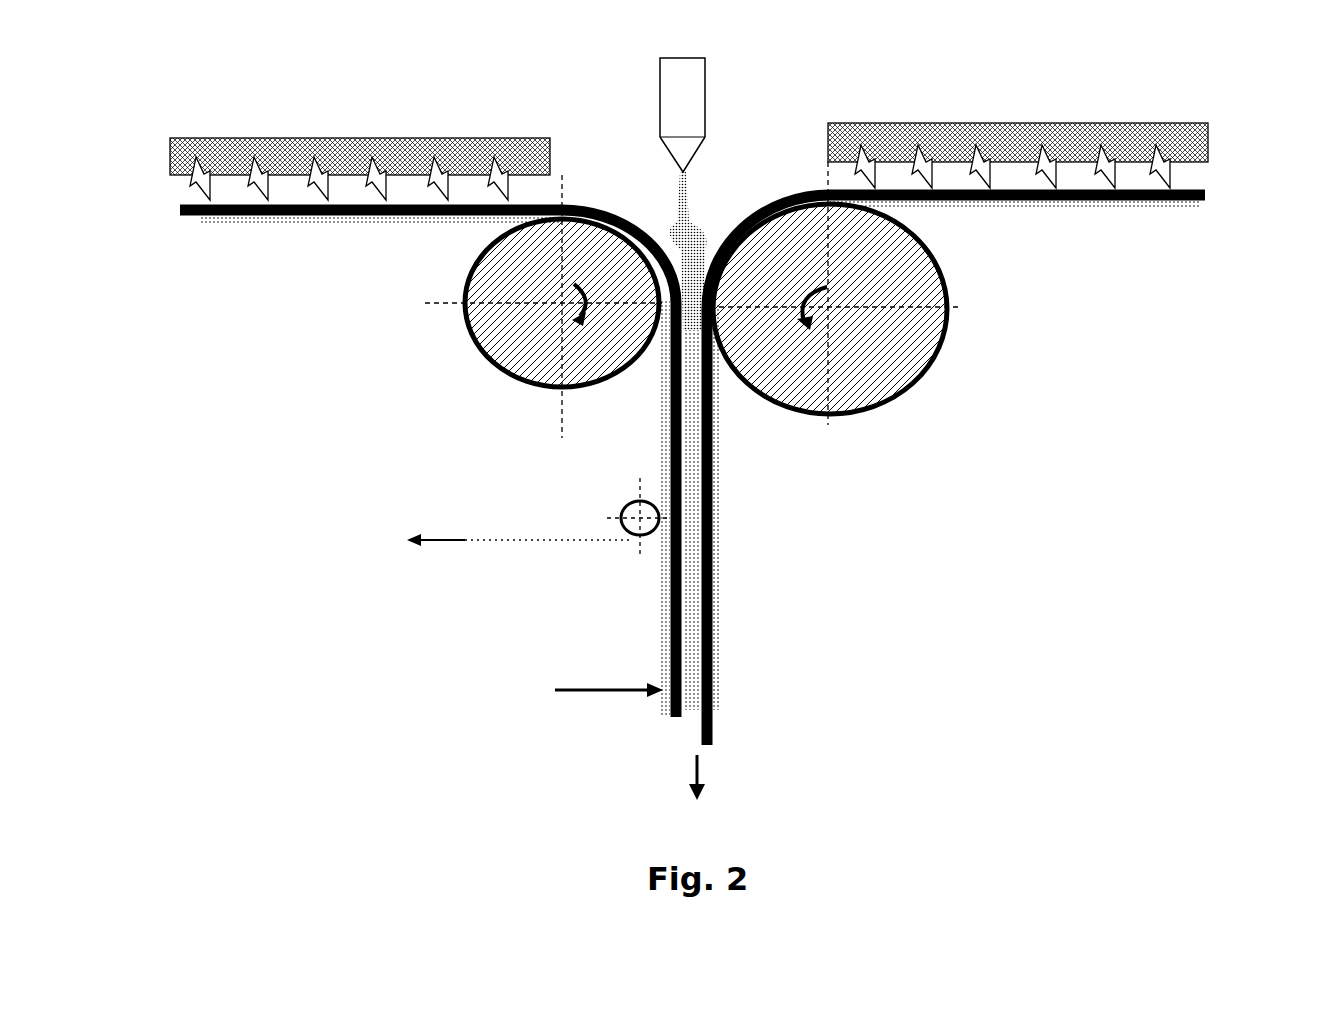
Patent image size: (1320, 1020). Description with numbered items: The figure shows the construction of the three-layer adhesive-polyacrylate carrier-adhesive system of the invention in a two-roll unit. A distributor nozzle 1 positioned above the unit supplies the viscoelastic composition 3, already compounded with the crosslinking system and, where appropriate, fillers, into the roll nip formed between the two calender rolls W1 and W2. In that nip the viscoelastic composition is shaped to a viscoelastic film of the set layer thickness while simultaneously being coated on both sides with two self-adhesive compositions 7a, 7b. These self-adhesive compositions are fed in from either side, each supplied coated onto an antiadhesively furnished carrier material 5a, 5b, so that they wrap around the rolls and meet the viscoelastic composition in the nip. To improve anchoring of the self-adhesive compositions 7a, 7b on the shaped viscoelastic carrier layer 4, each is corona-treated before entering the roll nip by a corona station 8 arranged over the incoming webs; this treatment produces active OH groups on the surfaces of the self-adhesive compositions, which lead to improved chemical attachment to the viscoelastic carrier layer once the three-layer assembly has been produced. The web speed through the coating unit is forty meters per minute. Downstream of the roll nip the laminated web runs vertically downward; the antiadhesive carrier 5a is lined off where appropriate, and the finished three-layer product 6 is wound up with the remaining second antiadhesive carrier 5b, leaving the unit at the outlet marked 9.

The distributor nozzle 1 is at (685, 112).
The viscoelastic composition 3 is at (687, 247).
The viscoelastic carrier layer 4 is at (690, 575).
The antiadhesive carrier material 5a is at (337, 218).
The antiadhesive carrier material 5b is at (1003, 205).
The finished three-layer product 6 is at (593, 692).
The self-adhesive composition 7a is at (183, 215).
The self-adhesive composition 7b is at (1205, 197).
The corona station 8 is at (388, 147).
The laminate product outlet 9 is at (713, 772).
The calender roll W1 is at (498, 342).
The calender roll W2 is at (905, 350).